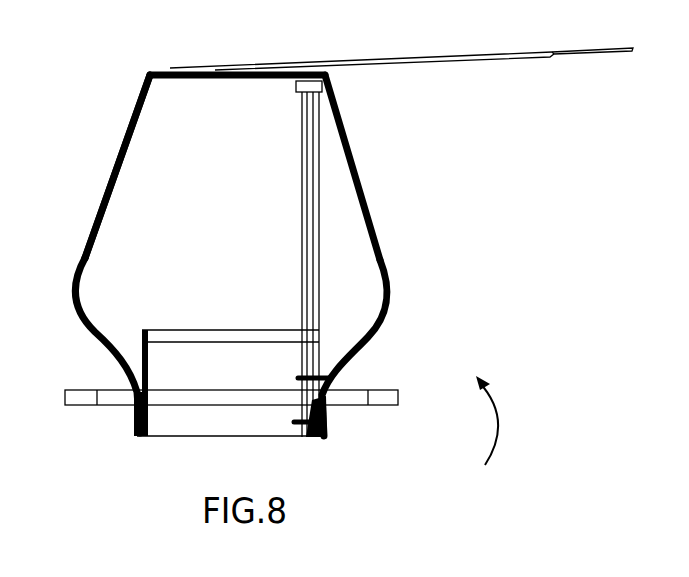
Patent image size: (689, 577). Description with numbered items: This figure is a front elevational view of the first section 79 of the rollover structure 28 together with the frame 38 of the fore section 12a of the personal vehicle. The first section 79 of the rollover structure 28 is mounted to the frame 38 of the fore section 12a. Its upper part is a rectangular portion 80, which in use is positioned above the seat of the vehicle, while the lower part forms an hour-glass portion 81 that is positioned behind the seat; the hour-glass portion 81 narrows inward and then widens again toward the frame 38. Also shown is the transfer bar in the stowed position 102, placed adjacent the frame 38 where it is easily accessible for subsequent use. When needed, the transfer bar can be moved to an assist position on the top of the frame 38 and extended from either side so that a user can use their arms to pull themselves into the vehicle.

The rectangular portion 80 is at (236, 62).
The rollover structure 28 is at (118, 167).
The first section 79 is at (108, 195).
The hour-glass portion 81 is at (84, 262).
The transfer bar in the stowed position 102 is at (313, 273).
The frame 38 is at (350, 405).
The fore section 12a is at (474, 438).